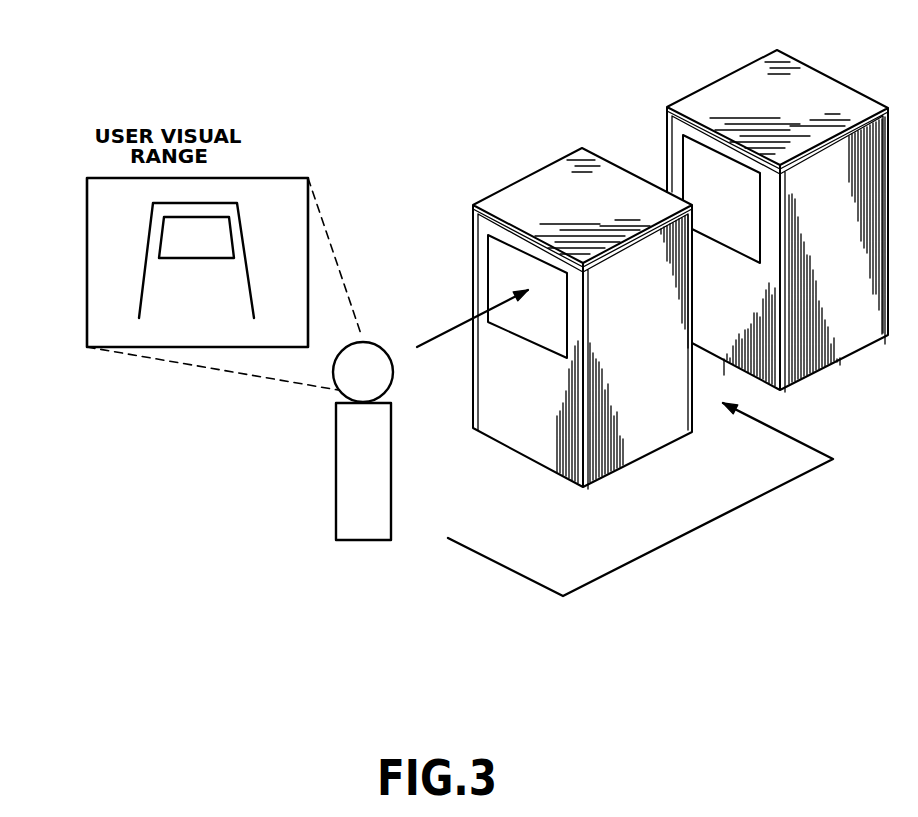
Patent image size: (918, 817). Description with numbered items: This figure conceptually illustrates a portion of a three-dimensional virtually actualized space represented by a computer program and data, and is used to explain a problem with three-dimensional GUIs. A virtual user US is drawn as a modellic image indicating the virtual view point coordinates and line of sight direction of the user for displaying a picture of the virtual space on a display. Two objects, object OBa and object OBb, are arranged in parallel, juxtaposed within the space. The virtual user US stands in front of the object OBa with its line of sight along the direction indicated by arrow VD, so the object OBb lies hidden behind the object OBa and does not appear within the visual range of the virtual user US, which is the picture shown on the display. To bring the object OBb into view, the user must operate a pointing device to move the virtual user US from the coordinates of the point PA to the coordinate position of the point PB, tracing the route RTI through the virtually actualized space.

The object OBa is at (157, 273).
The object OBb is at (737, 85).
The virtual user US is at (370, 533).
The arrow VD is at (440, 340).
The point PA is at (438, 526).
The point PB is at (721, 391).
The route RTI is at (683, 535).